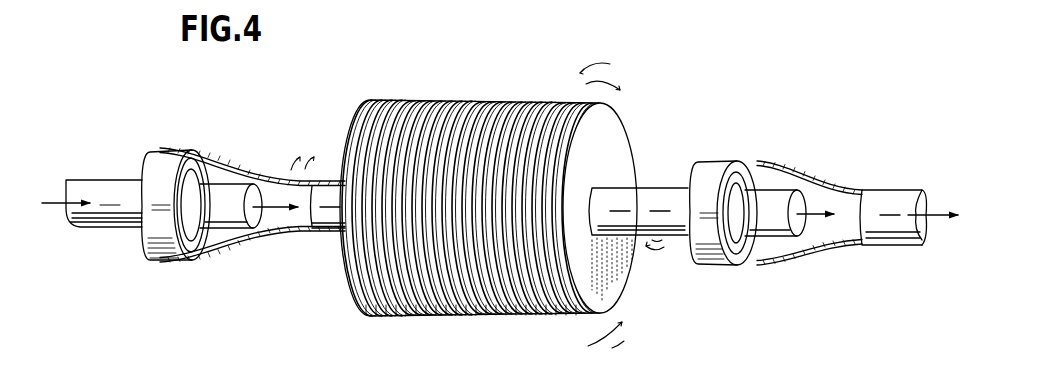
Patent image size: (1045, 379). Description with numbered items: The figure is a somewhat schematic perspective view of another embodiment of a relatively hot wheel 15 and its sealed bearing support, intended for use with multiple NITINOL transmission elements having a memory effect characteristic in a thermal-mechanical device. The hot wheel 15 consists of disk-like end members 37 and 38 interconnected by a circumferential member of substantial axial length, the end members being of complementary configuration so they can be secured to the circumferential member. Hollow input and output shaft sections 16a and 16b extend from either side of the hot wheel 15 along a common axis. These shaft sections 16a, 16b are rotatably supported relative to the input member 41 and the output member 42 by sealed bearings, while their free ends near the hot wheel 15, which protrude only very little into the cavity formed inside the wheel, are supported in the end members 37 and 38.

The hot wheel 15 is at (492, 193).
The hollow input shaft section 16a is at (273, 237).
The hollow output shaft section 16b is at (658, 200).
The disk-like end member 37 is at (352, 123).
The disk-like end member 38 is at (612, 142).
The input member 41 is at (103, 186).
The output member 42 is at (850, 190).